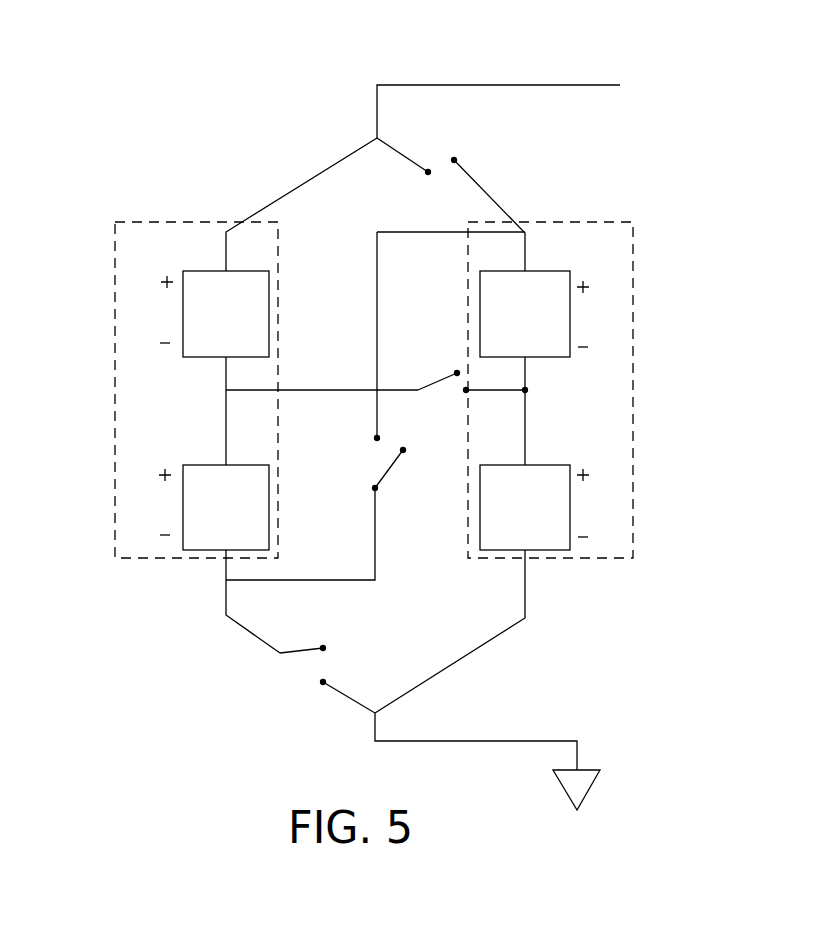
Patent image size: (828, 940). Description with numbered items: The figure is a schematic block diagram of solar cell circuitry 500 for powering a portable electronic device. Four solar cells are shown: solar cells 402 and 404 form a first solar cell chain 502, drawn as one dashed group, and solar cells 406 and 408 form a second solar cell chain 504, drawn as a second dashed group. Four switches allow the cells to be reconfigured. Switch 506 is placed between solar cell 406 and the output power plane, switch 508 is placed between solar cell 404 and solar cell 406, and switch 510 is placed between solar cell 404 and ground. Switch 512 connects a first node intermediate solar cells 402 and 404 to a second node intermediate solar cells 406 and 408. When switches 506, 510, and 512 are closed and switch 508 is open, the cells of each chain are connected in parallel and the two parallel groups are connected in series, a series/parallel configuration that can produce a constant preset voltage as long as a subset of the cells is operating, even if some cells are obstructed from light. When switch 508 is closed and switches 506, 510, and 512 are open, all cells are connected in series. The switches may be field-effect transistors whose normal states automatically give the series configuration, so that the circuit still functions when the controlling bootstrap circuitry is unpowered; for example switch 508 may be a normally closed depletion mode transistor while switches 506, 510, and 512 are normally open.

The solar cell circuitry 500 is at (267, 124).
The first solar cell chain 502 is at (138, 222).
The second solar cell chain 504 is at (618, 222).
The solar cell 402 is at (197, 280).
The solar cell 404 is at (197, 470).
The solar cell 406 is at (557, 280).
The solar cell 408 is at (557, 473).
The switch 506 is at (465, 175).
The switch 508 is at (383, 473).
The switch 510 is at (308, 653).
The switch 512 is at (432, 382).